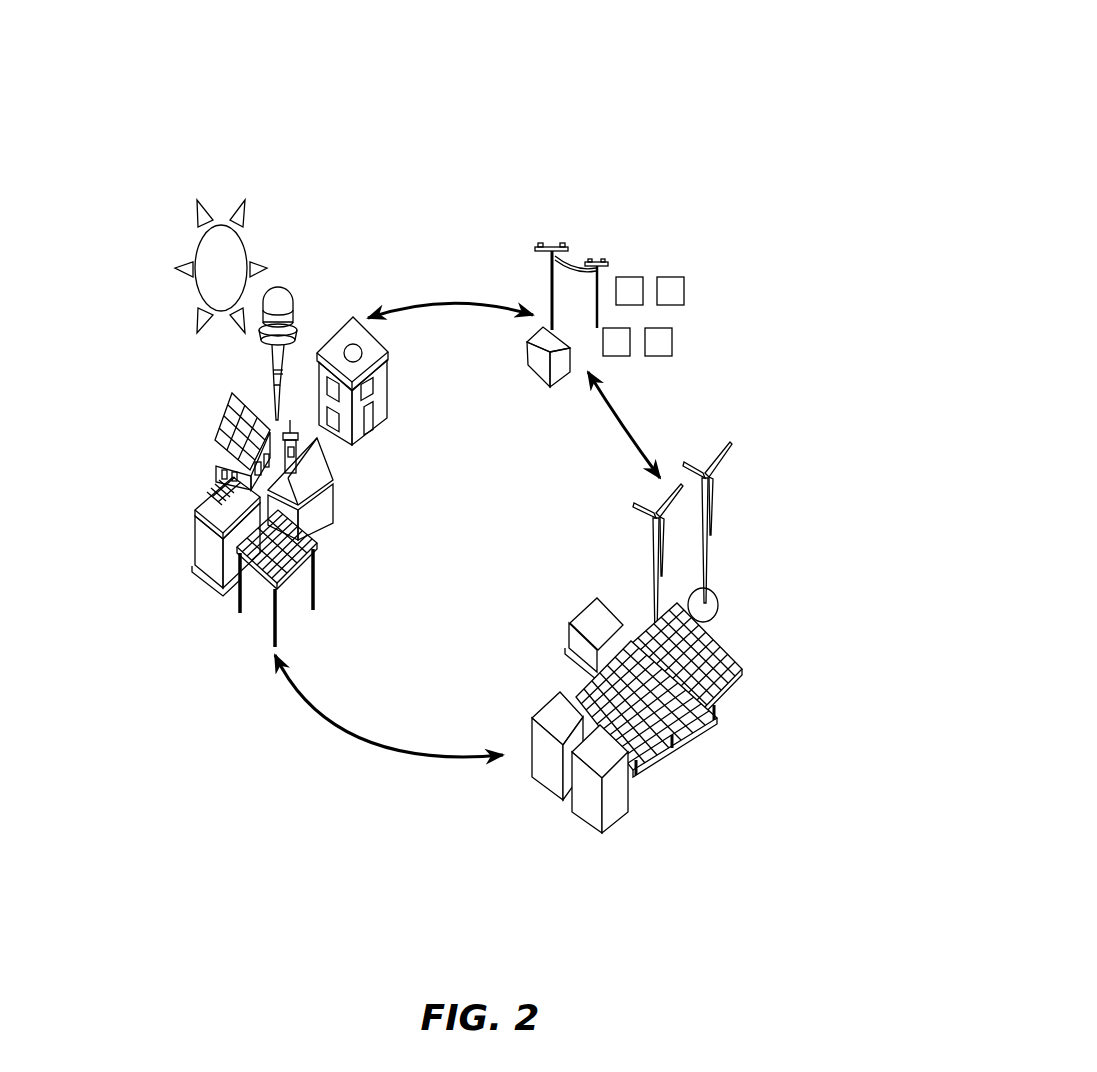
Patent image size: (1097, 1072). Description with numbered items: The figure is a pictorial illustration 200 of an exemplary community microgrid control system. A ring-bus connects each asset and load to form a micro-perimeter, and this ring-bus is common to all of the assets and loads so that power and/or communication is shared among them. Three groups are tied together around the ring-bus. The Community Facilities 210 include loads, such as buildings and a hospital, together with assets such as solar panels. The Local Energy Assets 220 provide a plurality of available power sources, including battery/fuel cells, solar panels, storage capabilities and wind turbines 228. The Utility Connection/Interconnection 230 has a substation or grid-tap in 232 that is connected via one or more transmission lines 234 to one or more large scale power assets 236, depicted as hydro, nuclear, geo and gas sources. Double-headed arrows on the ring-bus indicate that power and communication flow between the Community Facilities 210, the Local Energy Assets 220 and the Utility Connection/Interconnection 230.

The pictorial illustration 200 is at (773, 51).
The Community Facilities 210 is at (176, 467).
The Local Energy Assets 220 is at (734, 779).
The wind turbines 228 is at (707, 552).
The Utility Connection/Interconnection 230 is at (635, 240).
The substation or grid-tap in 232 is at (530, 383).
The transmission line 234 is at (547, 240).
The large scale power assets 236 is at (704, 336).